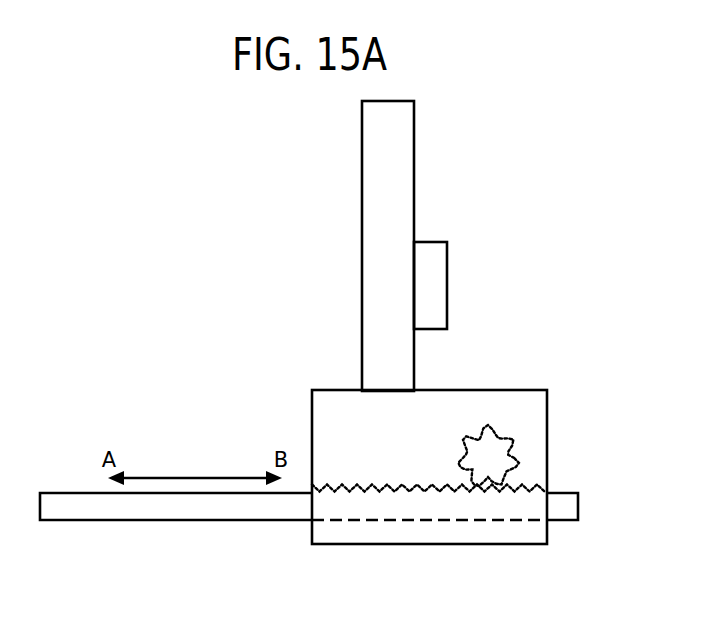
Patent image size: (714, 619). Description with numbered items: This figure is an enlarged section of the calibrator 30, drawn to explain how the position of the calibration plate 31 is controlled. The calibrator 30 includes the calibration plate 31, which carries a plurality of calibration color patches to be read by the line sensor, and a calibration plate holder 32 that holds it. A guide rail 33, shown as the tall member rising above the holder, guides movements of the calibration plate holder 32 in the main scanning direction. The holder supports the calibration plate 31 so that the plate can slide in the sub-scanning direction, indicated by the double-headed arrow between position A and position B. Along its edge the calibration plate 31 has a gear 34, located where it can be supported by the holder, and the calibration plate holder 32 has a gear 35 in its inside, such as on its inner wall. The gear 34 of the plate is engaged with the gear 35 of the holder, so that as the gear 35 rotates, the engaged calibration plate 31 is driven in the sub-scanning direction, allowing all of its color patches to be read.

The calibrator 30 is at (457, 161).
The calibration plate 31 is at (72, 492).
The calibration plate holder 32 is at (503, 390).
The guide rail 33 is at (430, 241).
The gear 34 is at (390, 481).
The gear 35 is at (457, 445).